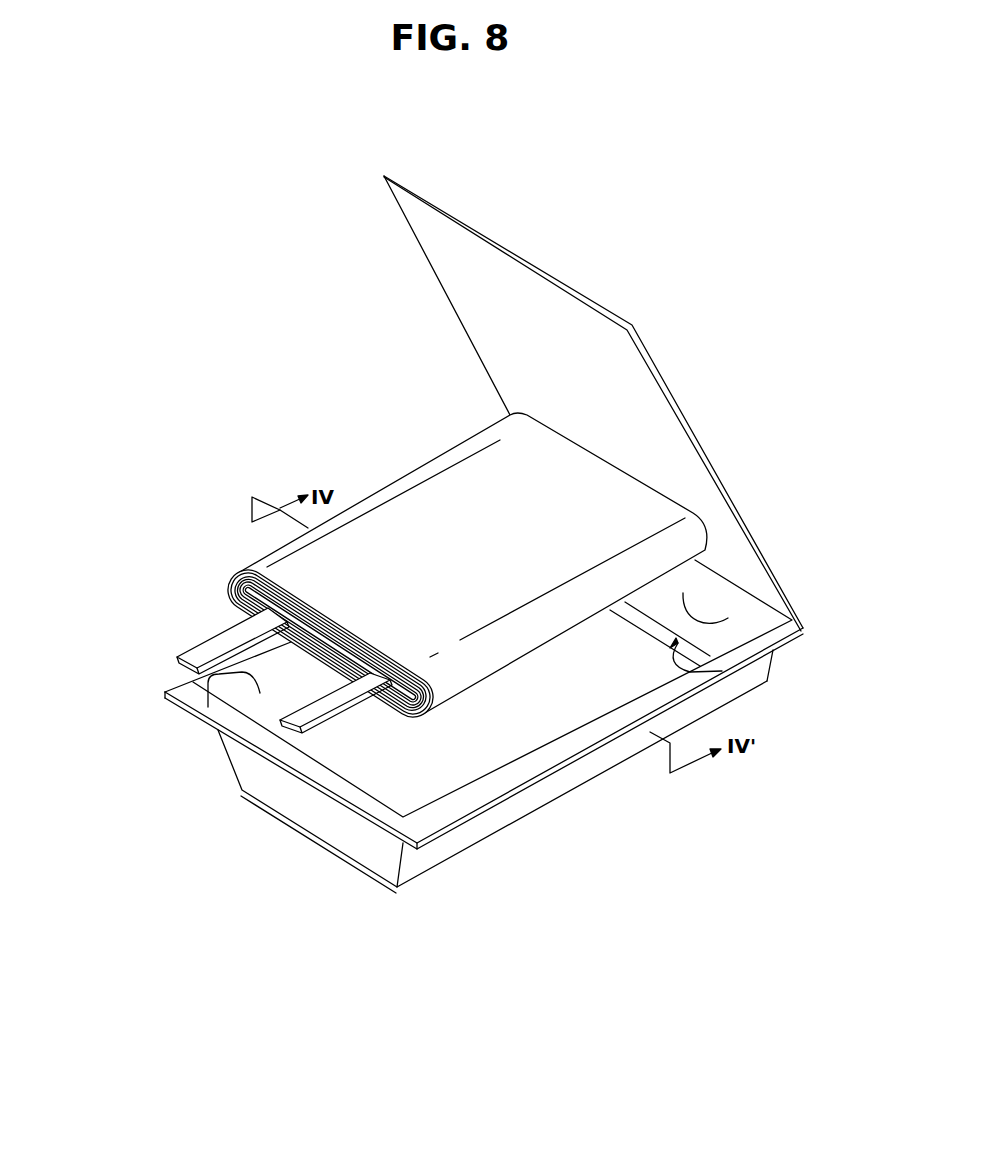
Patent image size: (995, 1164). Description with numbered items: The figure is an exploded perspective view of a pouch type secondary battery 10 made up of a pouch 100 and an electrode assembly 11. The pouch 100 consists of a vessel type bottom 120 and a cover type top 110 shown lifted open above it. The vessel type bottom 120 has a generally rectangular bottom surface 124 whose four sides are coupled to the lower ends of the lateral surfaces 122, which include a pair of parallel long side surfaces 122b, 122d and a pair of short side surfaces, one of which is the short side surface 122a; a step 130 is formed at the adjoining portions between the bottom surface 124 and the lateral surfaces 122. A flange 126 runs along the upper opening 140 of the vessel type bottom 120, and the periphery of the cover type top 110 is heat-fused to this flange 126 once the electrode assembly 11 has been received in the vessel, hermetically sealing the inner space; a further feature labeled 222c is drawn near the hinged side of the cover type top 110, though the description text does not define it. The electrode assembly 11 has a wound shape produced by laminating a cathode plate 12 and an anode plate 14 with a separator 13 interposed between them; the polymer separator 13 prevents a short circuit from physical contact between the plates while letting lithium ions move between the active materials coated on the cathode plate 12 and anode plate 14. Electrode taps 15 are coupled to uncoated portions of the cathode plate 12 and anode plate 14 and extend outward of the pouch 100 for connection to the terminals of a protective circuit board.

The pouch type secondary battery 10 is at (403, 462).
The electrode assembly 11 is at (390, 512).
The cathode plate 12 is at (230, 580).
The separator 13 is at (241, 578).
The anode plate 14 is at (237, 599).
The electrode tap 15 is at (202, 652).
The pouch 100 is at (417, 570).
The cover type top 110 is at (443, 262).
The vessel type bottom 120 is at (416, 762).
The lateral surfaces 122 is at (406, 803).
The short side surface 122a is at (386, 857).
The long side surface 122b is at (522, 803).
The long side surface 122d is at (203, 684).
The bottom surface 124 is at (353, 767).
The flange 126 is at (200, 696).
The step 130 is at (727, 672).
The upper opening 140 is at (584, 716).
The coupling groove 222c is at (728, 618).